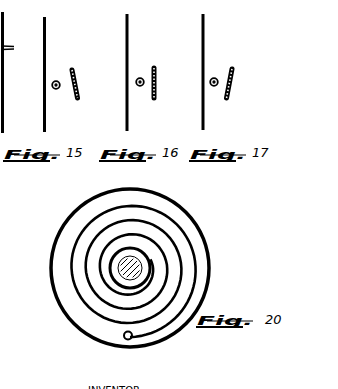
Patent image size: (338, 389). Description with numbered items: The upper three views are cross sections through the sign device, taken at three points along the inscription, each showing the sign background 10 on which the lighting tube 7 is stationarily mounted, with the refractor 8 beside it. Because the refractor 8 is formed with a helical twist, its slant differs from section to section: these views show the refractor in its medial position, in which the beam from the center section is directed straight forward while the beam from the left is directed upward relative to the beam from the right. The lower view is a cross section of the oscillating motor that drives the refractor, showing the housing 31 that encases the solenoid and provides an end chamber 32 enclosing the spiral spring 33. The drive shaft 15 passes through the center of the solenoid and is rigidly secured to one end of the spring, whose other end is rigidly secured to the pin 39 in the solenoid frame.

In FIG. 15, the background 10 is at (46, 33).
In FIG. 16, the gaseous conduction lighting tube 7 is at (142, 77).
In FIG. 17, the refractor 8 is at (235, 73).
In FIG. 20, the housing 31 is at (190, 215).
In FIG. 20, the end chamber 32 is at (193, 240).
In FIG. 20, the spiral spring 33 is at (193, 259).
In FIG. 20, the drive shaft 15 is at (124, 264).
In FIG. 20, the pin 39 is at (132, 337).